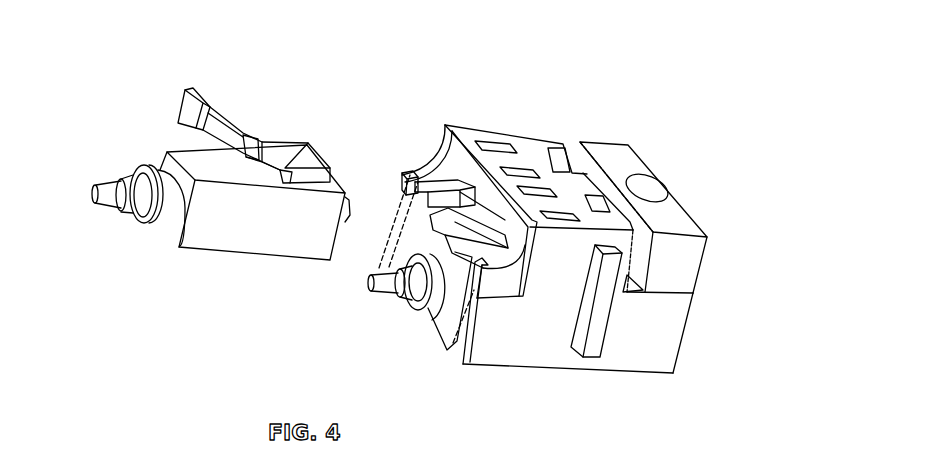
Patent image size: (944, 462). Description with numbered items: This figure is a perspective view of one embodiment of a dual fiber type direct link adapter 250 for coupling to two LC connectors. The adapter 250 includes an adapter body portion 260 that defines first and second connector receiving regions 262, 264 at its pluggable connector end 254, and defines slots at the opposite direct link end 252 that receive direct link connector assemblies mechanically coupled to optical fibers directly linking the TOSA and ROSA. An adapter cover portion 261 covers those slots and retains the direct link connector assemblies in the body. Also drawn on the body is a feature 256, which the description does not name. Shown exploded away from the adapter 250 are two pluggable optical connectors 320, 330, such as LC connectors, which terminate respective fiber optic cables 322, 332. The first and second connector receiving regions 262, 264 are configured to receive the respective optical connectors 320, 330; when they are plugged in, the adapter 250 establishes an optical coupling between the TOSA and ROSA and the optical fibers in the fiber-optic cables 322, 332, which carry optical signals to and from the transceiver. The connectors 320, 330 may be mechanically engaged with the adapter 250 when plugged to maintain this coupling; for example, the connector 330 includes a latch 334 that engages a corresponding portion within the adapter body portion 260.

The dual fiber type direct link adapter 250 is at (548, 107).
The direct link end 252 is at (717, 345).
The pluggable connector end 254 is at (380, 150).
The rib 256 is at (600, 320).
The adapter body portion 260 is at (547, 358).
The adapter cover portion 261 is at (693, 272).
The first connector receiving region 262 is at (460, 248).
The second connector receiving region 264 is at (415, 217).
The pluggable optical connector 320 is at (410, 307).
The fiber optic cable 322 is at (370, 282).
The pluggable optical connector 330 is at (233, 250).
The fiber optic cable 332 is at (105, 195).
The latch 334 is at (255, 148).